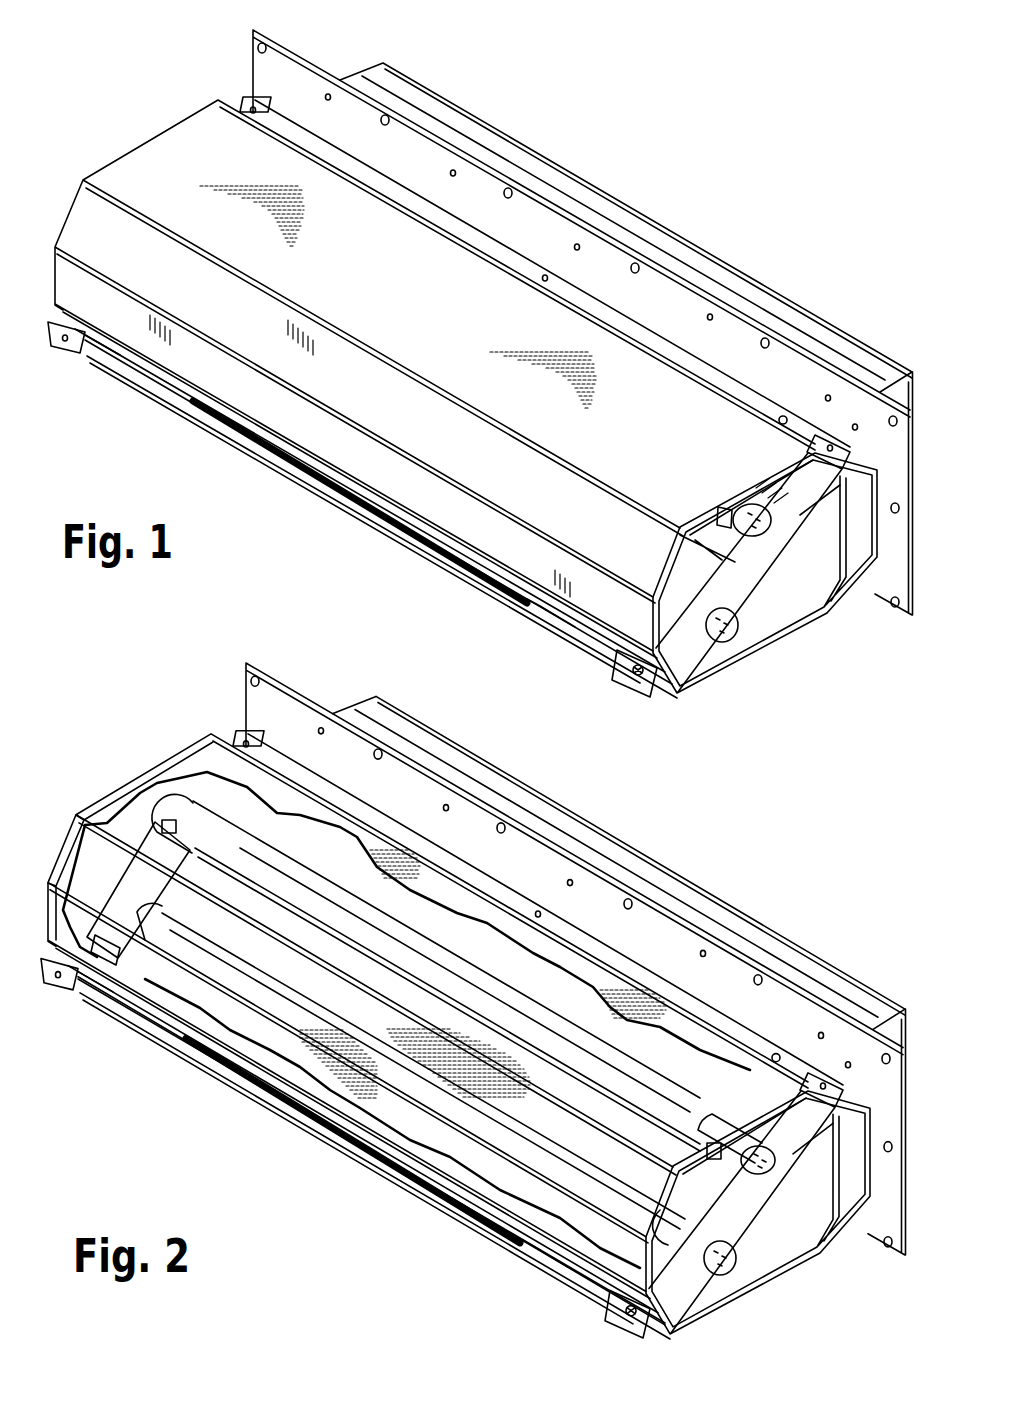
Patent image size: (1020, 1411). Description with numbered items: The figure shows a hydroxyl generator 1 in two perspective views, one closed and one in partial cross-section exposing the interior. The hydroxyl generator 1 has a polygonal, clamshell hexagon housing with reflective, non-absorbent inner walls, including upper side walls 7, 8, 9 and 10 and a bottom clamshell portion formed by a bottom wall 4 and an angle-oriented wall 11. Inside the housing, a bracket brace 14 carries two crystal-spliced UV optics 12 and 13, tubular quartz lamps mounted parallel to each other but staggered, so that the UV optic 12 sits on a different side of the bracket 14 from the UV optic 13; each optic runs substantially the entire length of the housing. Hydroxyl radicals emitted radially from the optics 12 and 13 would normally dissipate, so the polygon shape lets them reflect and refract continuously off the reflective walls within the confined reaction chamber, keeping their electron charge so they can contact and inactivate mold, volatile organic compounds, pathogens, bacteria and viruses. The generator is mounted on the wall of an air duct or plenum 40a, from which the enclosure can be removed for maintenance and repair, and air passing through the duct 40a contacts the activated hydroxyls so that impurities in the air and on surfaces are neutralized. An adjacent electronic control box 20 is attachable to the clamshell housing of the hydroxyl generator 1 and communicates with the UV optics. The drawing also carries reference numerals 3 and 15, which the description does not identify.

In FIG. 1, the hydroxyl generator 1 is at (718, 198).
In FIG. 2, the hydroxyl generator 1 is at (775, 901).
In FIG. 1, the housing 3 is at (102, 136).
In FIG. 2, the housing 3 is at (63, 791).
In FIG. 1, the bottom wall 4 is at (776, 607).
In FIG. 2, the bottom wall 4 is at (765, 1250).
In FIG. 1, the upper side wall 7 is at (812, 410).
In FIG. 2, the upper side wall 7 is at (746, 1203).
In FIG. 1, the upper side wall 8 is at (828, 505).
In FIG. 1, the upper side wall 9 is at (172, 352).
In FIG. 2, the upper side wall 9 is at (170, 1005).
In FIG. 1, the upper side wall 10 is at (282, 462).
In FIG. 1, the angle-oriented wall 11 is at (573, 625).
In FIG. 1, the crystal-spliced UV optic 12 is at (740, 626).
In FIG. 2, the crystal-spliced UV optic 12 is at (125, 950).
In FIG. 1, the crystal-spliced UV optic 13 is at (742, 505).
In FIG. 2, the crystal-spliced UV optic 13 is at (188, 818).
In FIG. 1, the bracket brace 14 is at (673, 630).
In FIG. 2, the bracket brace 14 is at (665, 1268).
In FIG. 2, the end frame 15 is at (110, 913).
In FIG. 1, the electronic control box 20 is at (895, 359).
In FIG. 2, the electronic control box 20 is at (877, 984).
In FIG. 1, the air duct wall 40a is at (340, 103).
In FIG. 2, the air duct wall 40a is at (300, 715).